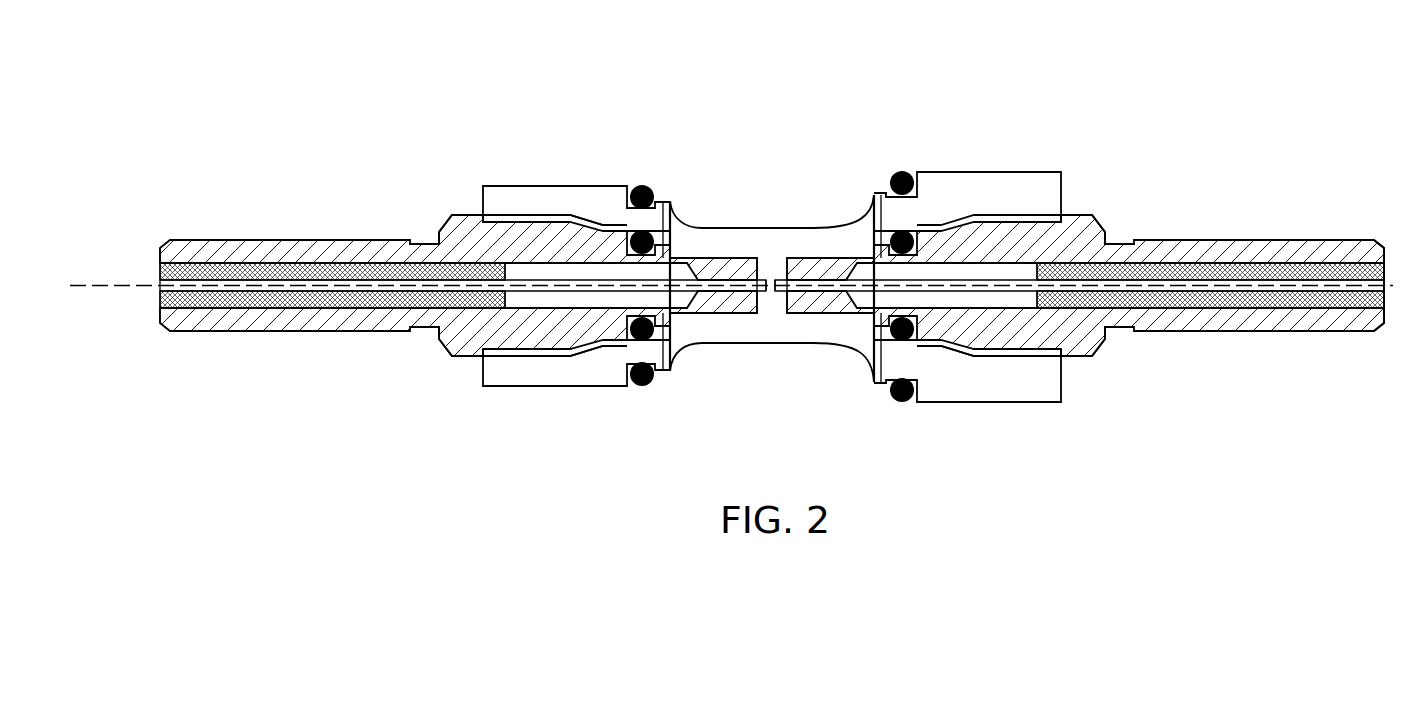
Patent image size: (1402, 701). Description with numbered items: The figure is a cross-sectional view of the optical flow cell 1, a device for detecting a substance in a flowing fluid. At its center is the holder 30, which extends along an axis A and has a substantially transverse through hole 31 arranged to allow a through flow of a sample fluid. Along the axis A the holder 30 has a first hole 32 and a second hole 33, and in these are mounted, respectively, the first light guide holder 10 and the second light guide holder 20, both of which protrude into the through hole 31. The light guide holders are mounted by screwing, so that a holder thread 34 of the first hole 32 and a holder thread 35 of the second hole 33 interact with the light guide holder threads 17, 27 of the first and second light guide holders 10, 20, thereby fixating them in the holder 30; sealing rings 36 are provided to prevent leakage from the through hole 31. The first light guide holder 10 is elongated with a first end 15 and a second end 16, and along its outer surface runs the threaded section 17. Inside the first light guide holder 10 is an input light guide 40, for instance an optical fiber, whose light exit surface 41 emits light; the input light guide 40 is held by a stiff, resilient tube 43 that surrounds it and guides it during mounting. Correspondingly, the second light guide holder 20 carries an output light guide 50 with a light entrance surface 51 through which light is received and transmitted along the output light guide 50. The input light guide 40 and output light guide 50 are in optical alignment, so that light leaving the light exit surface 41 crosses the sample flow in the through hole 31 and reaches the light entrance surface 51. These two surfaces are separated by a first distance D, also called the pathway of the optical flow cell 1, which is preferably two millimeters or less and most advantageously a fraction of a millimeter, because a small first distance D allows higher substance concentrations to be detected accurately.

The optical flow cell 1 is at (377, 126).
The first light guide holder 10 is at (1205, 217).
The first end 15 is at (805, 317).
The second end 16 is at (1365, 345).
The light guide holder thread 17 is at (1000, 352).
The second light guide holder 20 is at (279, 233).
The light guide holder thread 27 is at (498, 354).
The holder 30 is at (598, 183).
The through hole 31 is at (703, 228).
The first hole 32 is at (1036, 211).
The second hole 33 is at (507, 213).
The holder thread 34 is at (1028, 356).
The holder thread 35 is at (545, 350).
The sealing ring 36 is at (650, 230).
The input light guide 40 is at (787, 314).
The light exit surface 41 is at (784, 279).
The tube 43 is at (1292, 272).
The output light guide 50 is at (762, 314).
The light entrance surface 51 is at (767, 279).
The first distance D is at (769, 270).
The axis A is at (720, 287).